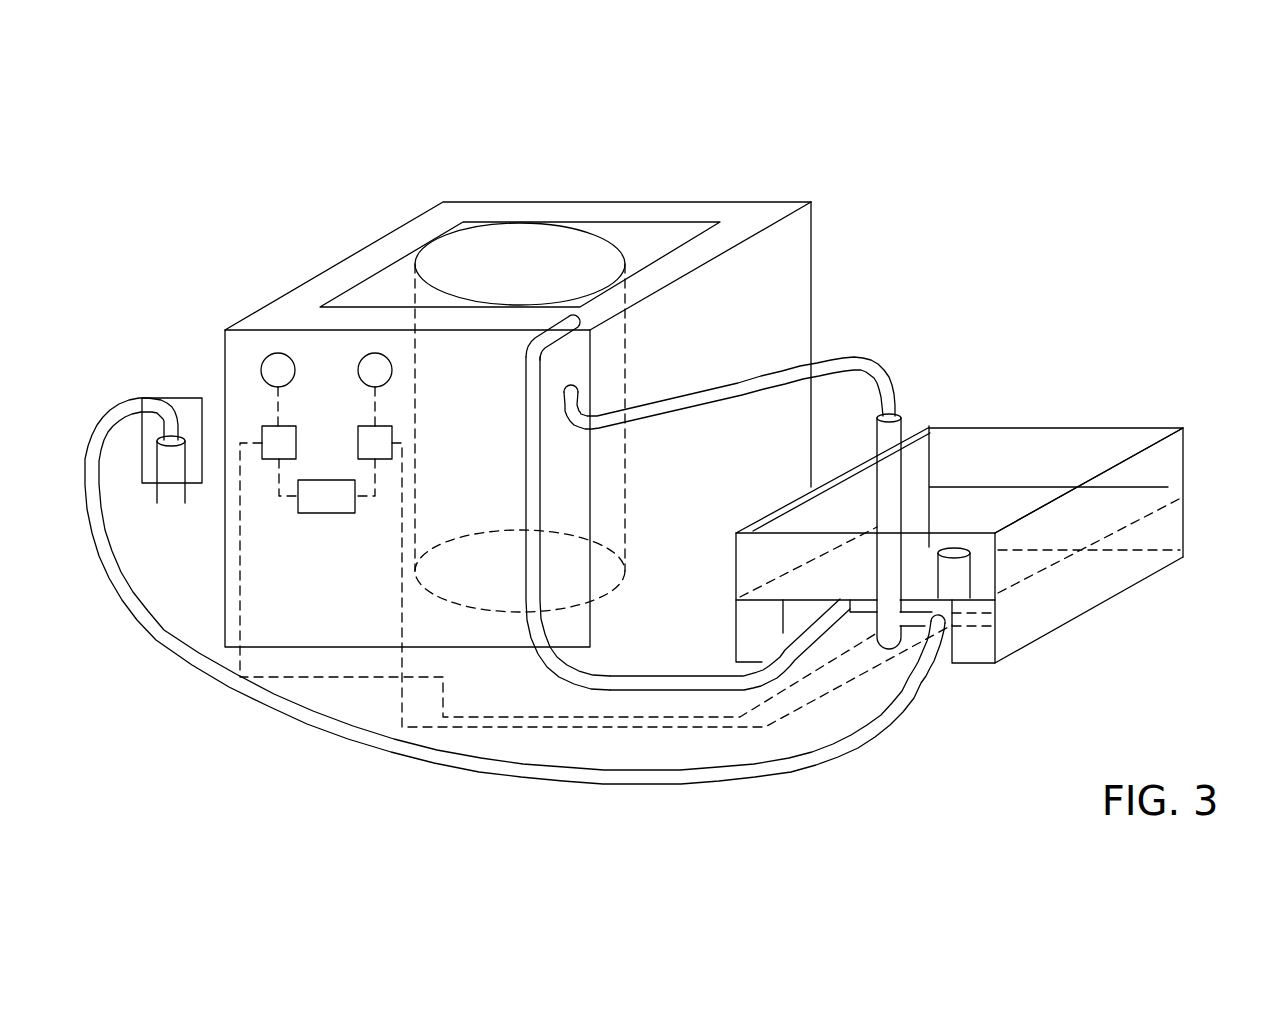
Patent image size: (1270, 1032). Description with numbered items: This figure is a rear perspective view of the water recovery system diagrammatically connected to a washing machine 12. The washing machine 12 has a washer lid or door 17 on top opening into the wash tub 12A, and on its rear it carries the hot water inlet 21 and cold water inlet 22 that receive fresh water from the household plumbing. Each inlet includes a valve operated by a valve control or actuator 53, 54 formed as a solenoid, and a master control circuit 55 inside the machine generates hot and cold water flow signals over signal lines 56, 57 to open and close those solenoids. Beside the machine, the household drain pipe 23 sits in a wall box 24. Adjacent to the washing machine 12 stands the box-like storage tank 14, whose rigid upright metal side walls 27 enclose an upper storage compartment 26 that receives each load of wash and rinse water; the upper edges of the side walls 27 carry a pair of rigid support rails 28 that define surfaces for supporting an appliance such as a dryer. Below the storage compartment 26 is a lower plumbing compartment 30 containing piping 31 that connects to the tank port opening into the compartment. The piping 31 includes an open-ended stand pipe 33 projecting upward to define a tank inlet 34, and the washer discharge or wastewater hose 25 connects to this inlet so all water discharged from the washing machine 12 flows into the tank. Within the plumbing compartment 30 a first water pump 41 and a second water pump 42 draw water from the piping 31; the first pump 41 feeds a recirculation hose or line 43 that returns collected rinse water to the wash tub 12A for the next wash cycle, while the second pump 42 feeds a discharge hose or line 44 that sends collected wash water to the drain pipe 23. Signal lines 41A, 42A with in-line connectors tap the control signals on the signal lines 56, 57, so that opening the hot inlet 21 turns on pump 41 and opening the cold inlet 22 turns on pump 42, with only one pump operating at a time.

The washing machine 12 is at (813, 237).
The wash tub 12A is at (502, 222).
The washer lid or door 17 is at (609, 202).
The hot water inlet 21 is at (261, 372).
The cold water inlet 22 is at (358, 366).
The drain pipe 23 is at (170, 470).
The wall box 24 is at (195, 398).
The discharge or wastewater hose 25 is at (745, 383).
The upper storage compartment 26 is at (1005, 425).
The side walls 27 is at (1165, 458).
The support rails 28 is at (1160, 428).
The lower plumbing compartment 30 is at (933, 683).
The piping 31 is at (912, 405).
The stand pipe 33 is at (888, 467).
The tank inlet 34 is at (835, 395).
The first water pump 41 is at (907, 584).
The signal line 41A is at (335, 677).
The second water pump 42 is at (1053, 613).
The signal line 42A is at (460, 730).
The recirculation hose or line 43 is at (672, 690).
The discharge hose or line 44 is at (815, 757).
The valve control or actuator 53 is at (262, 440).
The valve control or actuator 54 is at (358, 443).
The master control circuit 55 is at (323, 513).
The signal line 56 is at (278, 478).
The signal line 57 is at (366, 497).
The storage tank 14 is at (1117, 418).